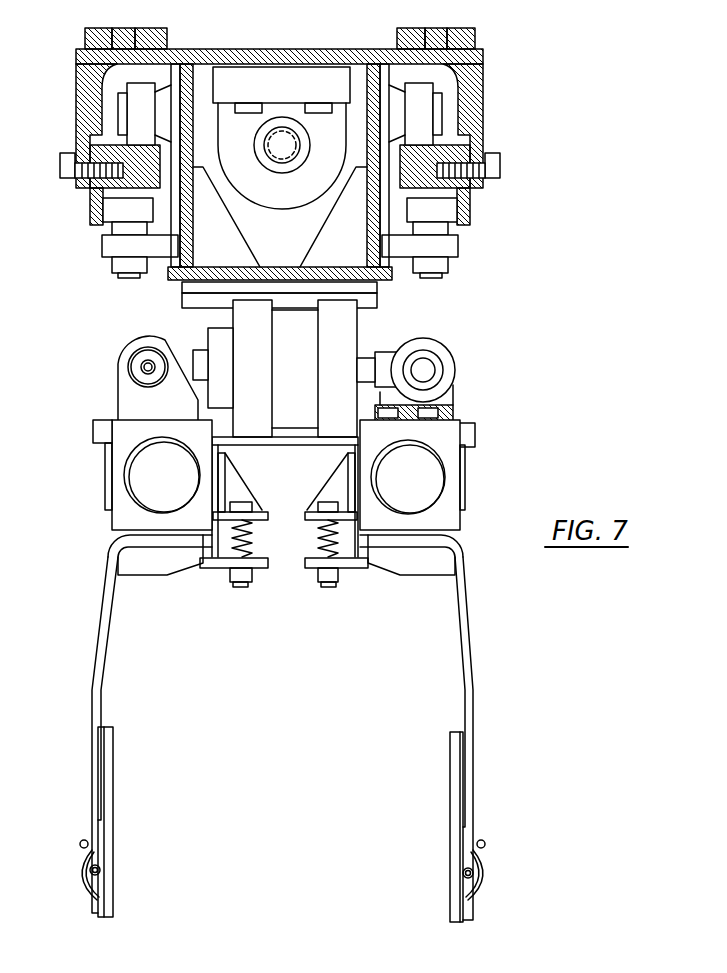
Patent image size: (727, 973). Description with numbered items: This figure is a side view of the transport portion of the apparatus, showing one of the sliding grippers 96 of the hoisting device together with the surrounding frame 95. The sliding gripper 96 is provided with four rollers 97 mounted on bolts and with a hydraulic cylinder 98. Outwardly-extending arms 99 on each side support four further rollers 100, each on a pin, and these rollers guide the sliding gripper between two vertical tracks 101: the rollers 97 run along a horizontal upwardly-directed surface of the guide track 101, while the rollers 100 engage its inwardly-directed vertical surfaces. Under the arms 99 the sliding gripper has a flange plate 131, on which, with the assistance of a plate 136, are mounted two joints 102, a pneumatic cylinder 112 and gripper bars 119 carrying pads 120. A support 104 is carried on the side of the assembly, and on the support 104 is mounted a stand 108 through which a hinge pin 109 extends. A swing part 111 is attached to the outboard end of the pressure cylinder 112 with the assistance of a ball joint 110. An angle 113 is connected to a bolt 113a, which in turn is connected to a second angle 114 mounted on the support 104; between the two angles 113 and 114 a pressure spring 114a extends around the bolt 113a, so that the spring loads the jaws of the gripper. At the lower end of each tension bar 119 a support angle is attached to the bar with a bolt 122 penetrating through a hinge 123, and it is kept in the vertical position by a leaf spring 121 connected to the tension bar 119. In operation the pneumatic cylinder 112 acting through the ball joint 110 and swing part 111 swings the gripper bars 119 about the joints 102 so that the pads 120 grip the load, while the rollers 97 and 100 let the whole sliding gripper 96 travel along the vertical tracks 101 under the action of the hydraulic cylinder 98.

The frame housing 95 is at (82, 65).
The roller 97 is at (139, 92).
The hydraulic cylinder 98 is at (292, 148).
The sliding gripper 96 is at (242, 218).
The vertical track 101 is at (105, 188).
The roller 100 is at (110, 211).
The outwardly-extending arm 99 is at (110, 247).
The flange plate 131 is at (183, 298).
The pneumatic cylinder 112 is at (310, 352).
The swing part 111 is at (186, 352).
The stand 108 is at (127, 387).
The ball joint 110 is at (437, 362).
The hinge pin 109 is at (427, 373).
The plate 136 is at (475, 432).
The joint 102 is at (132, 479).
The support 104 is at (122, 523).
The second angle 114 is at (307, 511).
The pressure spring 114a is at (318, 550).
The bolt 113a is at (240, 557).
The angle 113 is at (355, 563).
The gripper bar 119 is at (466, 655).
The pad 120 is at (110, 767).
The leaf spring 121 is at (88, 893).
The bolt 122 is at (478, 871).
The hinge 123 is at (473, 882).